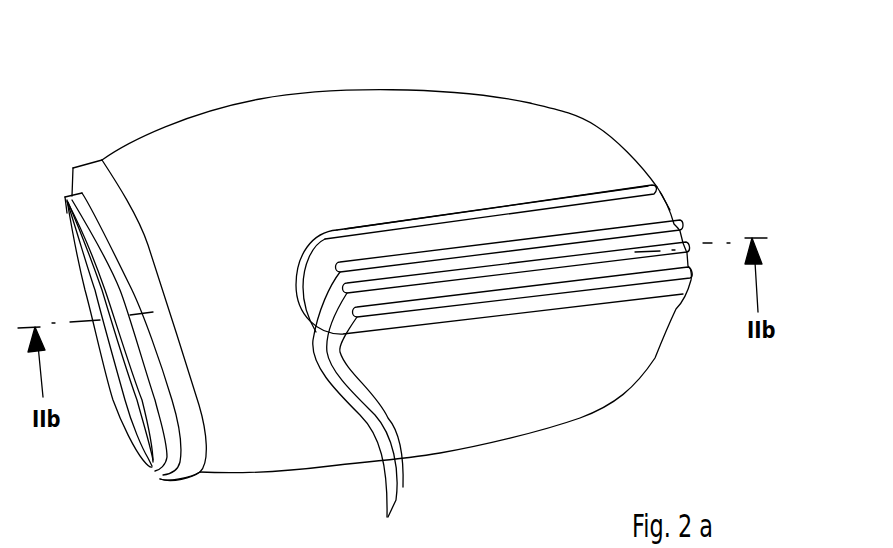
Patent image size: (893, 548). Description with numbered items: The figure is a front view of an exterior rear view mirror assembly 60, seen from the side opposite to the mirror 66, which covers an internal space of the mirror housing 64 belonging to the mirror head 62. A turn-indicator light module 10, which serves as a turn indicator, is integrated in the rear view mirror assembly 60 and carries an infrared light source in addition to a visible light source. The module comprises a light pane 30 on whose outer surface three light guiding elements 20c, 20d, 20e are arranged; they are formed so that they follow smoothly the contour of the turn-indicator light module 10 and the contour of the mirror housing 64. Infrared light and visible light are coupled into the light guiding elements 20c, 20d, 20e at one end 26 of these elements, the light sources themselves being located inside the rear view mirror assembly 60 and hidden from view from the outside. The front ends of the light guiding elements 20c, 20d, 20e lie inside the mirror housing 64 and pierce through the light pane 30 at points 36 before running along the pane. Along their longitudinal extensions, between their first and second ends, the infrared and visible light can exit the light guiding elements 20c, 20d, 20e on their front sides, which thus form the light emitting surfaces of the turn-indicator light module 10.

The turn-indicator light module 10 is at (670, 198).
The light guiding element 20c is at (680, 222).
The light guiding element 20d is at (688, 245).
The light guiding element 20e is at (688, 273).
The end of the light guiding elements 26 is at (330, 261).
The light pane 30 is at (578, 215).
The points 36 is at (358, 410).
The exterior rear view mirror assembly 60 is at (105, 101).
The mirror head 62 is at (246, 275).
The mirror housing 64 is at (263, 440).
The mirror 66 is at (200, 114).